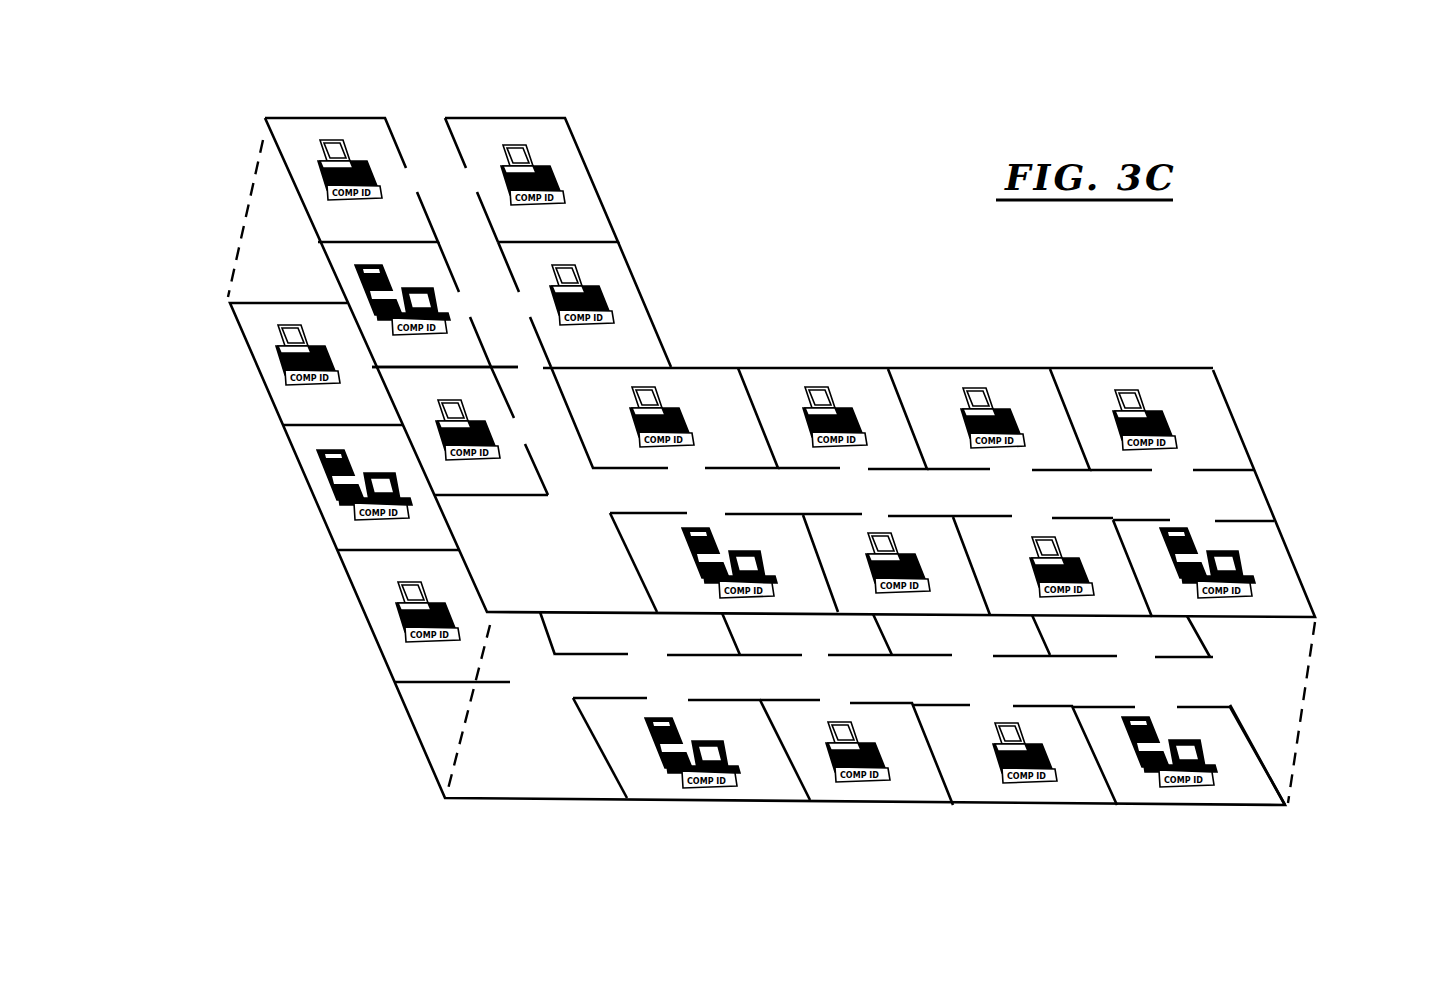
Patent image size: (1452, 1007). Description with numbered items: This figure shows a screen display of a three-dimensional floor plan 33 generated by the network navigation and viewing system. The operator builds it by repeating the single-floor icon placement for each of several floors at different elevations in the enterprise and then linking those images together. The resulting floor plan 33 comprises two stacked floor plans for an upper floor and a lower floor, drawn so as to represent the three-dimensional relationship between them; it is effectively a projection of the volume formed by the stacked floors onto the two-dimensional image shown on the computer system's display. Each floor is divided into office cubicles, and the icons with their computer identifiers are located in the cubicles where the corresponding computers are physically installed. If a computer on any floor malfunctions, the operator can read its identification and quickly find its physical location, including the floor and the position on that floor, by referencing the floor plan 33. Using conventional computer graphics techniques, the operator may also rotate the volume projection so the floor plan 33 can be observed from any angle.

The three-dimensional floor plan 33 is at (790, 218).